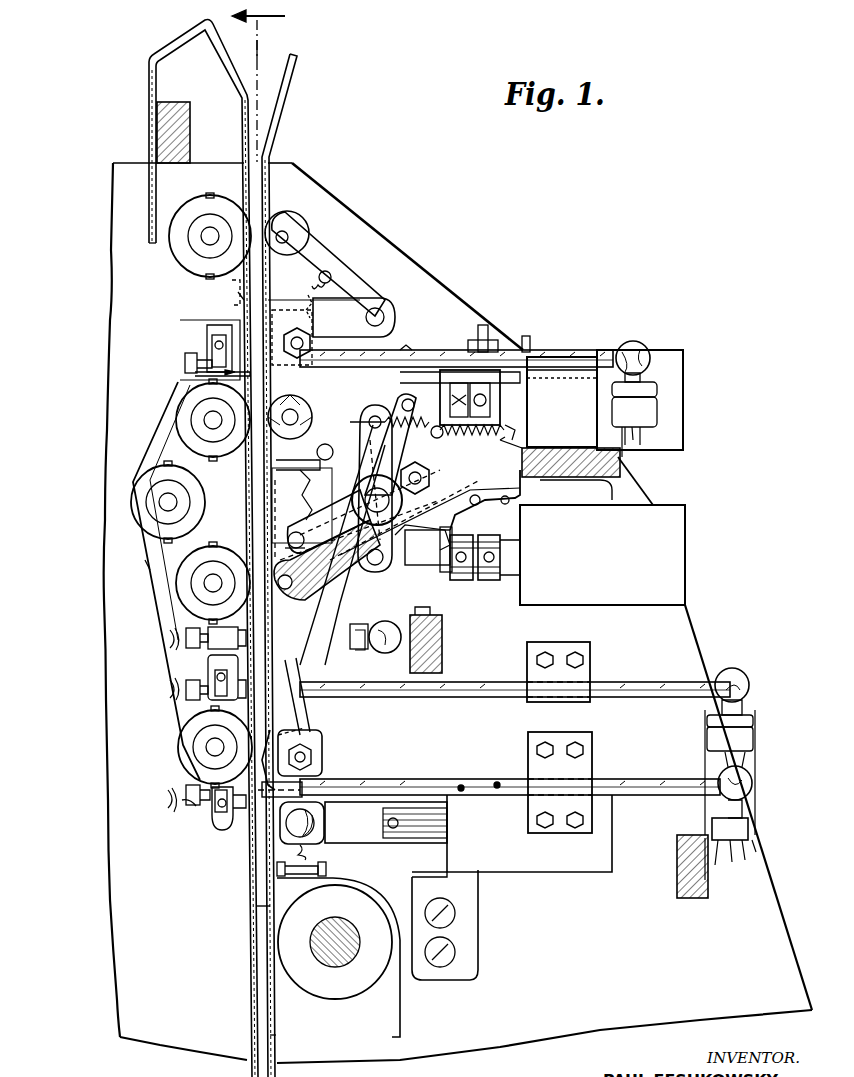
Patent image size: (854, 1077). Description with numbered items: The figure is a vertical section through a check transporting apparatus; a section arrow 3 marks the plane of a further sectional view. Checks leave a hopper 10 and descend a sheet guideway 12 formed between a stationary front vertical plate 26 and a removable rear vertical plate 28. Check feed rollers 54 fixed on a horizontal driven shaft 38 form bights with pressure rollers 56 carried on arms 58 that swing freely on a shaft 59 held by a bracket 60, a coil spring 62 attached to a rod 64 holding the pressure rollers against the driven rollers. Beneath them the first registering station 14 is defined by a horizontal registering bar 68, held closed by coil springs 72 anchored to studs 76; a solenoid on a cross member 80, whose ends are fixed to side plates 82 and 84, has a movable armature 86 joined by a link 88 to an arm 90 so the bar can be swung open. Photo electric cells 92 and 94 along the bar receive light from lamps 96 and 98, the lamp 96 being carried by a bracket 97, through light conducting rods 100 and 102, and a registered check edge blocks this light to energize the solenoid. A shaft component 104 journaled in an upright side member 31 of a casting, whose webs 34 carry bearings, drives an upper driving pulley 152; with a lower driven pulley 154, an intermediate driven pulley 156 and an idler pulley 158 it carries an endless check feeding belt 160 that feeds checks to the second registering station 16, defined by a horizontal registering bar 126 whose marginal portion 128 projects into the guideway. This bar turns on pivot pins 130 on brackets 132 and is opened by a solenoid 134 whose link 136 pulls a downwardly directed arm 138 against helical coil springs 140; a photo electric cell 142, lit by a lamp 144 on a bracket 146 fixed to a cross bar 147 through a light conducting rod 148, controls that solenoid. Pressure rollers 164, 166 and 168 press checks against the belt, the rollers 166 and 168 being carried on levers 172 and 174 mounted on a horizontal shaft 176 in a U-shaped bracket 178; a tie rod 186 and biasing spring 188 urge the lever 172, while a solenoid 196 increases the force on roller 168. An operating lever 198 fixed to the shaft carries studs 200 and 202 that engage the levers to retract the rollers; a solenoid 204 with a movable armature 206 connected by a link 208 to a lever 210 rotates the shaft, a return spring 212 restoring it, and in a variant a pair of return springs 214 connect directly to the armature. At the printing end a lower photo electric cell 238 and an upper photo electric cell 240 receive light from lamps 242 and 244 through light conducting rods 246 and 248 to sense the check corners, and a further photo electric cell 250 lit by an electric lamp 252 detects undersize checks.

The section line arrow 3 is at (271, 84).
The hopper 10 is at (268, 80).
The sheet guideway 12 is at (255, 287).
The first or preliminary sheet registering station 14 is at (240, 372).
The second sheet registering station 16 is at (222, 830).
The vertical plate 26 is at (244, 170).
The vertical plate 28 is at (272, 168).
The upright side member 31 is at (185, 318).
The web 34 is at (238, 300).
The horizontal driven shaft 38 is at (206, 240).
The check feed rollers 54 is at (188, 212).
The pressure rollers 56 is at (288, 215).
The arms 58 is at (315, 252).
The shaft 59 is at (382, 312).
The bracket 60 is at (348, 322).
The coil spring 62 is at (330, 278).
The rod 64 is at (330, 273).
The horizontal registering member or bar 68 is at (315, 347).
The coil springs 72 is at (315, 414).
The studs 76 is at (315, 460).
The cross member 80 is at (575, 447).
The side plate 82 is at (113, 170).
The side plate 84 is at (330, 200).
The movable armature 86 is at (452, 385).
The link 88 is at (420, 383).
The arm 90 is at (404, 402).
The photo electric cell 92 is at (185, 355).
The photo electric cell 94 is at (190, 345).
The lamp 96 is at (655, 385).
The bracket 97 is at (628, 486).
The lamp 98 is at (640, 345).
The light conducting rod 100 is at (466, 352).
The light conducting rod 102 is at (408, 352).
The shaft component 104 is at (206, 422).
The horizontal registering member or bar 126 is at (315, 781).
The longitudinal marginal portion 128 is at (262, 843).
The pivot pins 130 is at (320, 752).
The brackets 132 is at (290, 715).
The solenoid 134 is at (565, 866).
The link 136 is at (365, 842).
The downwardly directed arm 138 is at (318, 830).
The helical coil springs 140 is at (312, 852).
The photo electric cell 142 is at (180, 795).
The lamp 144 is at (750, 775).
The bracket 146 is at (752, 858).
The cross bar 147 is at (692, 898).
The light conducting rod 148 is at (475, 781).
The upper driving pulley 152 is at (186, 410).
The lower driven pulley 154 is at (188, 737).
The intermediate driven pulley 156 is at (190, 580).
The idler pulley 158 is at (150, 528).
The endless check feeding belt 160 is at (147, 563).
The pressure roller 164 is at (325, 428).
The pressure roller 166 is at (312, 598).
The pressure roller 168 is at (292, 722).
The lever 172 is at (312, 578).
The lever 174 is at (378, 580).
The horizontal shaft 176 is at (352, 518).
The U-shaped bracket 178 is at (280, 500).
The tie rod 186 is at (455, 440).
The biasing spring 188 is at (505, 500).
The solenoid 196 is at (672, 428).
The operating lever 198 is at (408, 490).
The stud 200 is at (300, 548).
The stud 202 is at (418, 498).
The solenoid 204 is at (680, 525).
The movable armature 206 is at (512, 555).
The link 208 is at (425, 565).
The lever 210 is at (388, 545).
The return spring 212 is at (515, 438).
The return springs 214 is at (486, 325).
The lower photo electric cell 238 is at (188, 812).
The upper photo electric cell 240 is at (178, 685).
The lamp 242 is at (748, 790).
The lamp 244 is at (750, 684).
The light conducting rod 246 is at (420, 779).
The light conducting rod 248 is at (475, 683).
The photo electric cell 250 is at (178, 635).
The electric lamp 252 is at (370, 650).